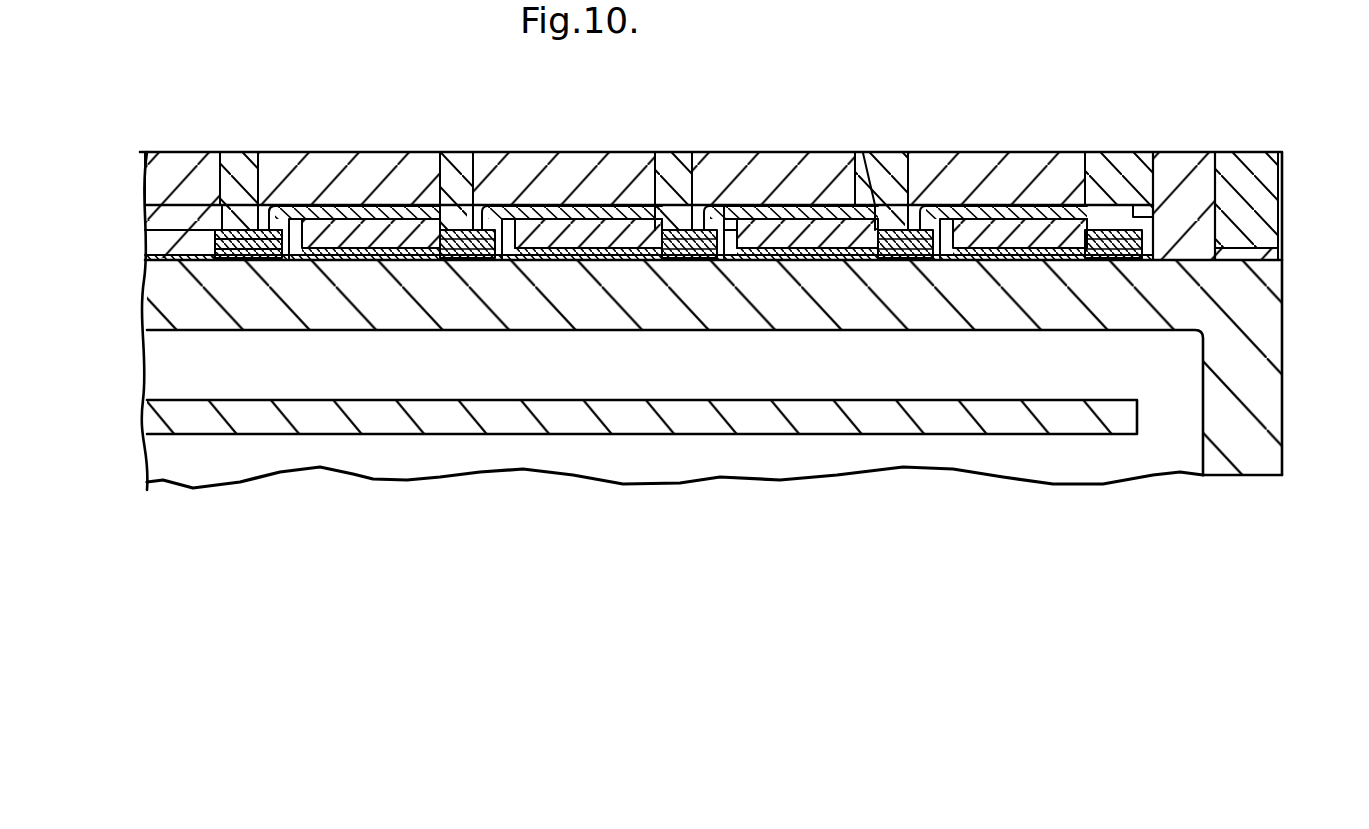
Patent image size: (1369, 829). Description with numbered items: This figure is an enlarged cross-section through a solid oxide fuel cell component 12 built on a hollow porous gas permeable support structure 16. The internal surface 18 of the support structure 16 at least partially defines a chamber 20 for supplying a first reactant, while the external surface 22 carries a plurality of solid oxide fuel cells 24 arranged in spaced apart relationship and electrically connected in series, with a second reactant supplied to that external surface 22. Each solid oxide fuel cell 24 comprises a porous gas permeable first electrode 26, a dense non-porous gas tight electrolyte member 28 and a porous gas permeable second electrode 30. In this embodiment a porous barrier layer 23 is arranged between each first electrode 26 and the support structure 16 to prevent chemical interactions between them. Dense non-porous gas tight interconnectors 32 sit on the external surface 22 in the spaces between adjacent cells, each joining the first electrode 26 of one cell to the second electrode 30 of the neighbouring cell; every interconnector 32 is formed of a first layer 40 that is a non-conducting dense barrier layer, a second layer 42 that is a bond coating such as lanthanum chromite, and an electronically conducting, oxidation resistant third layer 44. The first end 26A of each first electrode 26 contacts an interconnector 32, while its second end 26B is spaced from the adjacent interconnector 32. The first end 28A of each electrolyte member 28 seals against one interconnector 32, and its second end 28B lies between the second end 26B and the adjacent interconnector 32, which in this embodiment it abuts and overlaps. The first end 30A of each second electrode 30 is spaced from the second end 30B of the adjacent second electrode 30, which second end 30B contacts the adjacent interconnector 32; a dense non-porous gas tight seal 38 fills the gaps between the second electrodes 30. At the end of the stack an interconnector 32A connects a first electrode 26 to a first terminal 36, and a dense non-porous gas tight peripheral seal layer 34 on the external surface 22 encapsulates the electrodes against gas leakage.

The component 12 is at (1190, 134).
The hollow porous gas permeable support structure 16 is at (963, 297).
The internal surface 18 is at (1074, 324).
The chamber 20 is at (862, 386).
The external surface 22 is at (577, 253).
The porous barrier layer 23 is at (553, 258).
The solid oxide fuel cell 24 is at (297, 146).
The porous gas permeable first electrode 26 is at (348, 246).
The first end of first electrode 26A is at (852, 205).
The second end of first electrode 26B is at (756, 240).
The dense non-porous gas tight electrolyte member 28 is at (318, 206).
The first end of electrolyte 28A is at (228, 201).
The second end of electrolyte 28B is at (292, 256).
The porous gas permeable second electrode 30 is at (354, 152).
The first end of second electrode 30A is at (863, 153).
The second end of second electrode 30B is at (726, 170).
The dense non-porous gas tight interconnector 32 is at (215, 281).
The dense non-porous gas tight interconnector 32A is at (1130, 258).
The dense non-porous gas tight peripheral seal layer 34 is at (1278, 224).
The first terminal 36 is at (1213, 157).
The dense non-porous gas tight seal 38 is at (235, 152).
The first layer 40 is at (232, 249).
The second layer 42 is at (235, 233).
The third layer 44 is at (238, 236).